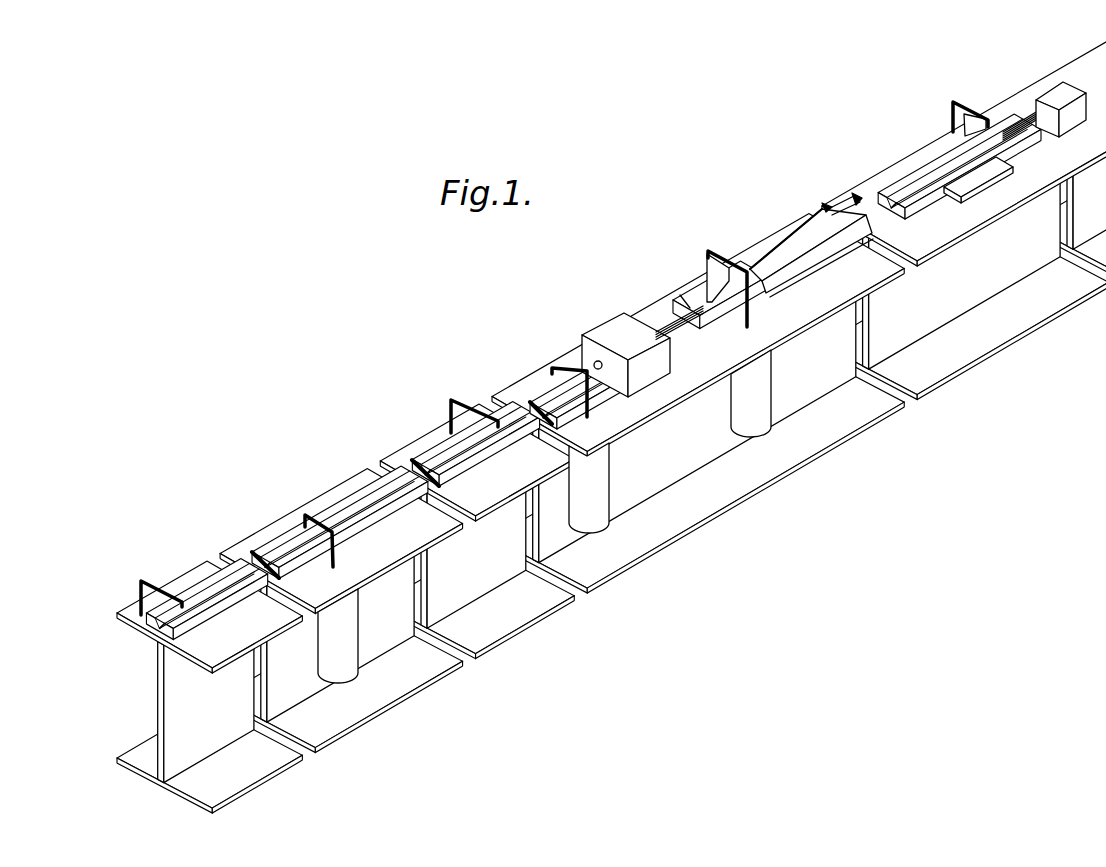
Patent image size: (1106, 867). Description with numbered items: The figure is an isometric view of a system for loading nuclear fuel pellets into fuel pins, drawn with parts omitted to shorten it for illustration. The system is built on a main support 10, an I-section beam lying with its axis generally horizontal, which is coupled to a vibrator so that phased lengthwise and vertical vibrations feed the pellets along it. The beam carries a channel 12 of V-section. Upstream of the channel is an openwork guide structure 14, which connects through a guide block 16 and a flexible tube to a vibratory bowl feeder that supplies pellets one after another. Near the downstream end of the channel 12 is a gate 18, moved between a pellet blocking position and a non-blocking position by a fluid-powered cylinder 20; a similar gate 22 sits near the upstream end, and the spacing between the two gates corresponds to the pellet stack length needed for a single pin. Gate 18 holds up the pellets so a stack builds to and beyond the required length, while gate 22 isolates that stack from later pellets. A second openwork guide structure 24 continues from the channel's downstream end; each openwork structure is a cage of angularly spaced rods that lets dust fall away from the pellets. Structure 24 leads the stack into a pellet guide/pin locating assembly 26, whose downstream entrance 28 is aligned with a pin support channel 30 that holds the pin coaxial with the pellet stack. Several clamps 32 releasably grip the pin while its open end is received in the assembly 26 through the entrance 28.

The main support 10 is at (738, 513).
The channel 12 is at (782, 207).
The openwork guide structure 14 is at (999, 111).
The guide block 16 is at (1053, 92).
The gate 18 is at (714, 251).
The fluid-powered cylinder 20 is at (768, 378).
The gate 22 is at (949, 112).
The openwork guide structure 24 is at (664, 328).
The pellet guide/pin locating assembly 26 is at (614, 318).
The entrance 28 is at (595, 360).
The pin support channel 30 is at (360, 503).
The clamps 32 is at (144, 580).